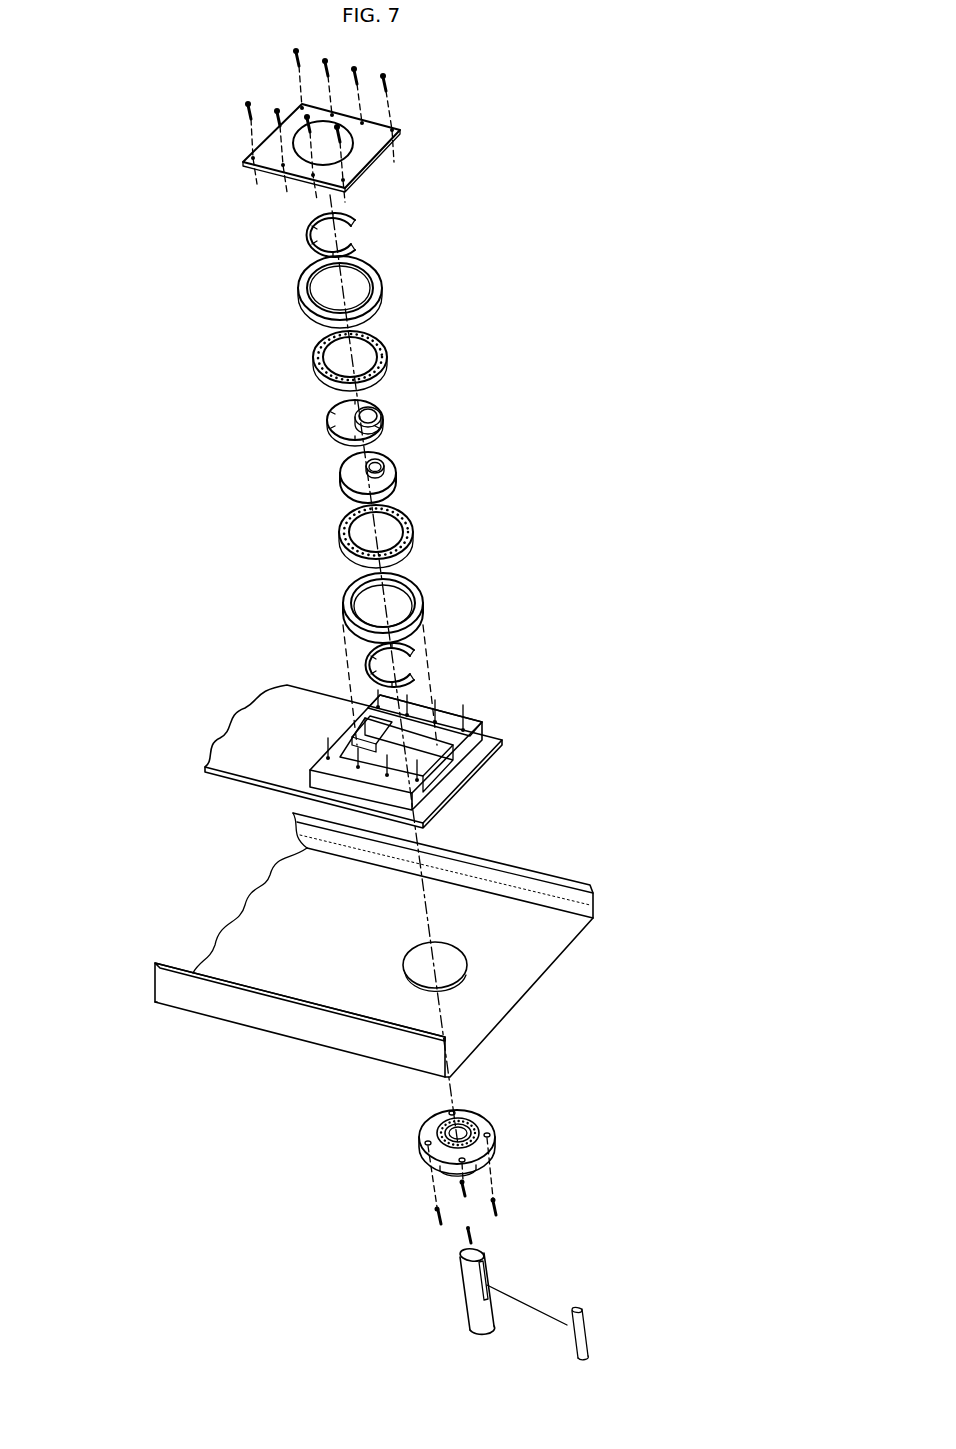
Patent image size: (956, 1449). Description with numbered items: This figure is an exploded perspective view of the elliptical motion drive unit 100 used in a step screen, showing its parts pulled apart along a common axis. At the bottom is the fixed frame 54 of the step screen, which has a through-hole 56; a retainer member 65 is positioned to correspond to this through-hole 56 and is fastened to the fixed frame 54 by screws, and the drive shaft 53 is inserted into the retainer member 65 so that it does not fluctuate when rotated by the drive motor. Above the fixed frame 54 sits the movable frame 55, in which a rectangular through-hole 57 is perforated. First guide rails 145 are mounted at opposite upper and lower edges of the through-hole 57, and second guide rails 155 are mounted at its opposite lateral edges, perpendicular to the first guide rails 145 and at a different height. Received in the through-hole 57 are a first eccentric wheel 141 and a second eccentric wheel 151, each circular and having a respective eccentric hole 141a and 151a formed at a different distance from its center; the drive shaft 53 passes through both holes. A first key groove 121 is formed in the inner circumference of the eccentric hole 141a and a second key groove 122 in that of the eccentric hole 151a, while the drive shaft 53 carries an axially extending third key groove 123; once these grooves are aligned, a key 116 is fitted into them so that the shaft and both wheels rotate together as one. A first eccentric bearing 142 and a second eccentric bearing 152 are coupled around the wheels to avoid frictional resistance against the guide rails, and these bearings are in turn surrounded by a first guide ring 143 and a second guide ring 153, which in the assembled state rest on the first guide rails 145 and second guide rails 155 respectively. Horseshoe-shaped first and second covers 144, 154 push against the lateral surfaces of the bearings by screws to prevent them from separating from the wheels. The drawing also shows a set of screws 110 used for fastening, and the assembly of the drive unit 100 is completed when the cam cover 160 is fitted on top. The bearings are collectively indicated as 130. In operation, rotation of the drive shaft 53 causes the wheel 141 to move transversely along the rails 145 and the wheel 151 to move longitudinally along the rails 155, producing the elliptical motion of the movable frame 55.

The elliptical motion drive unit 100 is at (168, 450).
The screws 110 is at (389, 88).
The cam cover 160 is at (366, 152).
The second cover 154 is at (307, 238).
The second guide ring 153 is at (300, 298).
The second eccentric bearing 152 is at (313, 358).
The bearings 130 is at (385, 345).
The second eccentric wheel 151 is at (327, 430).
The second eccentric hole 151a is at (372, 410).
The second key groove 122 is at (380, 413).
The first eccentric wheel 141 is at (395, 487).
The first eccentric hole 141a is at (375, 460).
The first key groove 121 is at (387, 468).
The first eccentric bearing 142 is at (413, 555).
The first guide ring 143 is at (427, 605).
The first cover 144 is at (417, 668).
The first guide rails 145 is at (357, 727).
The second guide rails 155 is at (453, 710).
The rectangular through-hole 57 is at (423, 757).
The movable frame 55 is at (223, 777).
The fixed frame 54 is at (205, 1008).
The through-hole 56 is at (455, 973).
The retainer member 65 is at (495, 1143).
The drive shaft 53 is at (473, 1295).
The third key groove 123 is at (487, 1273).
The key 116 is at (588, 1328).